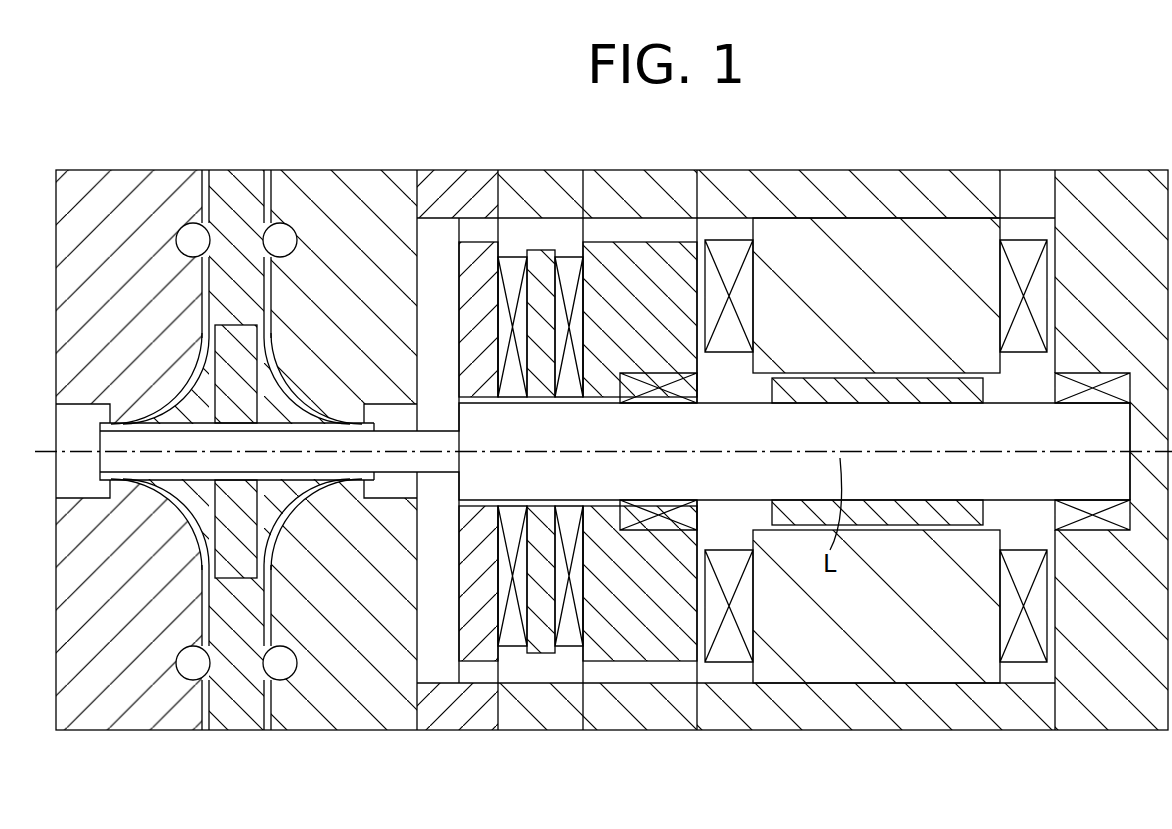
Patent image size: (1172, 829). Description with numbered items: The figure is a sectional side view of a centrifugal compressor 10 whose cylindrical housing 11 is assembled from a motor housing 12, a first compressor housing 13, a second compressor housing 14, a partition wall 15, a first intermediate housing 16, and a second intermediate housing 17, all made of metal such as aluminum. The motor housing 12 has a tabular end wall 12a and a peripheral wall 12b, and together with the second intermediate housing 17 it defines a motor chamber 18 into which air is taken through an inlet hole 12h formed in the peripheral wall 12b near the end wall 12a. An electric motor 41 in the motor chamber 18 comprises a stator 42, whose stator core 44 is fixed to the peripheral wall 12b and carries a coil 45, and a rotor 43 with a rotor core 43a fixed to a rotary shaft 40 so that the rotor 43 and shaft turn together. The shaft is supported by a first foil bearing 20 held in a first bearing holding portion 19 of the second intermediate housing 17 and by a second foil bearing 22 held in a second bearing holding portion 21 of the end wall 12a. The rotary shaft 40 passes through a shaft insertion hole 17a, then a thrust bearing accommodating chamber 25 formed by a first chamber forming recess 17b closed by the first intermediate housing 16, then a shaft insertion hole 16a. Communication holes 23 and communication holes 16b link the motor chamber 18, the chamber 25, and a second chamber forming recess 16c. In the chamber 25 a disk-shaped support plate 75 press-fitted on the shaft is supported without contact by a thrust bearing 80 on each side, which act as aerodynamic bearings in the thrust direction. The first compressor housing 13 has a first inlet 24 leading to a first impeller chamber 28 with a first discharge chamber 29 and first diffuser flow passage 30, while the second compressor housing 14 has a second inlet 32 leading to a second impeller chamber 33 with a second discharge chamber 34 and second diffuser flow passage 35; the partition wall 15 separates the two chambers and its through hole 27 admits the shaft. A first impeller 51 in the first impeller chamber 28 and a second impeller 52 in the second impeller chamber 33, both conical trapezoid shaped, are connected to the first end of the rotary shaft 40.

The centrifugal compressor 10 is at (73, 139).
The housing 11 is at (97, 170).
The motor housing 12 is at (790, 172).
The end wall 12a is at (1150, 300).
The peripheral wall 12b is at (812, 712).
The inlet hole 12h is at (1016, 188).
The first compressor housing 13 is at (356, 178).
The second compressor housing 14 is at (126, 172).
The partition wall 15 is at (222, 172).
The first intermediate housing 16 is at (425, 178).
The shaft insertion hole 16a is at (470, 494).
The communication holes 16b is at (483, 238).
The second chamber forming recess 16c is at (425, 687).
The second intermediate housing 17 is at (648, 178).
The shaft insertion hole 17a is at (598, 500).
The first chamber forming recess 17b is at (558, 686).
The motor chamber 18 is at (1012, 533).
The first bearing holding portion 19 is at (667, 372).
The first foil bearing 20 is at (656, 405).
The second bearing holding portion 21 is at (1095, 374).
The second foil bearing 22 is at (1093, 405).
The communication holes 23 is at (598, 232).
The first inlet 24 is at (400, 400).
The thrust bearing accommodating chamber 25 is at (511, 668).
The through hole 27 is at (246, 422).
The first impeller chamber 28 is at (295, 392).
The first discharge chamber 29 is at (278, 668).
The first diffuser flow passage 30 is at (272, 610).
The second inlet 32 is at (84, 398).
The second impeller chamber 33 is at (178, 392).
The second discharge chamber 34 is at (193, 661).
The second diffuser flow passage 35 is at (203, 592).
The rotary shaft 40 is at (745, 494).
The electric motor 41 is at (921, 695).
The stator 42 is at (868, 688).
The rotor 43 is at (888, 390).
The rotor core 43a is at (872, 522).
The stator core 44 is at (878, 224).
The coil 45 is at (726, 238).
The first impeller 51 is at (292, 508).
The second impeller 52 is at (167, 506).
The support plate 75 is at (535, 247).
The thrust bearing 80 is at (514, 402).